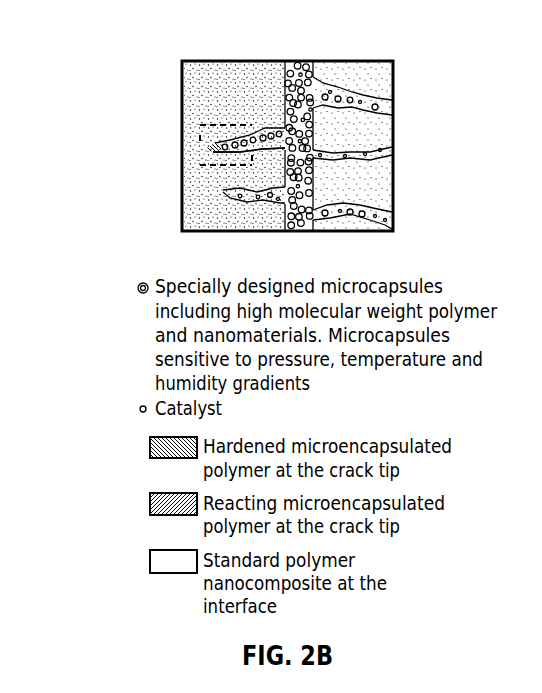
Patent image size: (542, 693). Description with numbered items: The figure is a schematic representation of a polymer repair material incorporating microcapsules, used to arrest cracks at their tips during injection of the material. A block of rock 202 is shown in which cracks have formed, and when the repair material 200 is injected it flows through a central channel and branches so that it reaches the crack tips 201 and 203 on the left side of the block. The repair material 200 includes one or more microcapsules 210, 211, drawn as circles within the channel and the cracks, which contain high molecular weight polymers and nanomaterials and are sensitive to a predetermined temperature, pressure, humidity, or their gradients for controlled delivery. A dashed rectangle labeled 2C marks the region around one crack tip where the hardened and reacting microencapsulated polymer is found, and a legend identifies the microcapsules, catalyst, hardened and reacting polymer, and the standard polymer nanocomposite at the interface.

The repair material 200 is at (243, 140).
The crack tip 201 is at (213, 150).
The rock 202 is at (190, 193).
The crack tip 203 is at (223, 191).
The microcapsule 210 is at (223, 143).
The microcapsule 211 is at (303, 80).
The detail region shown in FIG. 2C is at (222, 125).